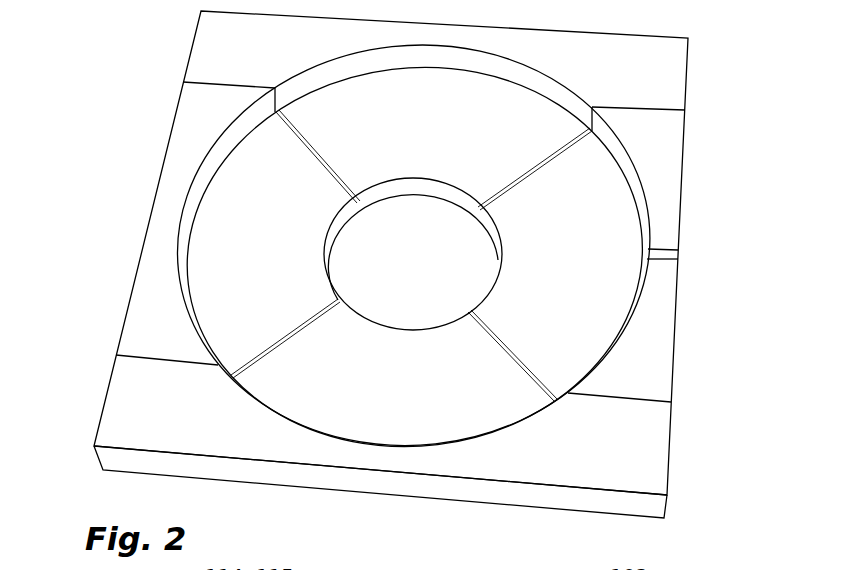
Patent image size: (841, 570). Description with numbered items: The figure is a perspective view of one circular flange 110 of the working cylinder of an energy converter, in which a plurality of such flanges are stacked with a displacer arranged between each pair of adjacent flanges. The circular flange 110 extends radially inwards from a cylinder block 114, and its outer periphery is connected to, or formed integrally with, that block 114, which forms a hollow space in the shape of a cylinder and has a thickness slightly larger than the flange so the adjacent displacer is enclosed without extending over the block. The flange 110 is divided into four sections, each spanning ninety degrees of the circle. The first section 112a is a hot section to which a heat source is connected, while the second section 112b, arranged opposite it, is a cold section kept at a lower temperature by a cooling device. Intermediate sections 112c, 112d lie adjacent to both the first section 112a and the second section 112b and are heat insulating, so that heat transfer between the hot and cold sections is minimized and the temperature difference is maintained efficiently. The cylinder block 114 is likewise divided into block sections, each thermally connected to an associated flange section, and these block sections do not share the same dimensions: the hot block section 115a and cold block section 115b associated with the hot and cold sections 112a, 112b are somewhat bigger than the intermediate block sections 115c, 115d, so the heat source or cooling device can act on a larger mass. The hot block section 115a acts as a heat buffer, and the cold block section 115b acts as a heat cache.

The circular flange 110 is at (298, 180).
The first section 112a is at (390, 382).
The second section 112b is at (434, 154).
The intermediate section 112c is at (282, 295).
The intermediate section 112d is at (536, 316).
The cylinder block 114 is at (127, 410).
The hot block section 115a is at (430, 497).
The cold block section 115b is at (648, 93).
The intermediate block section 115c is at (160, 246).
The intermediate block section 115d is at (663, 330).